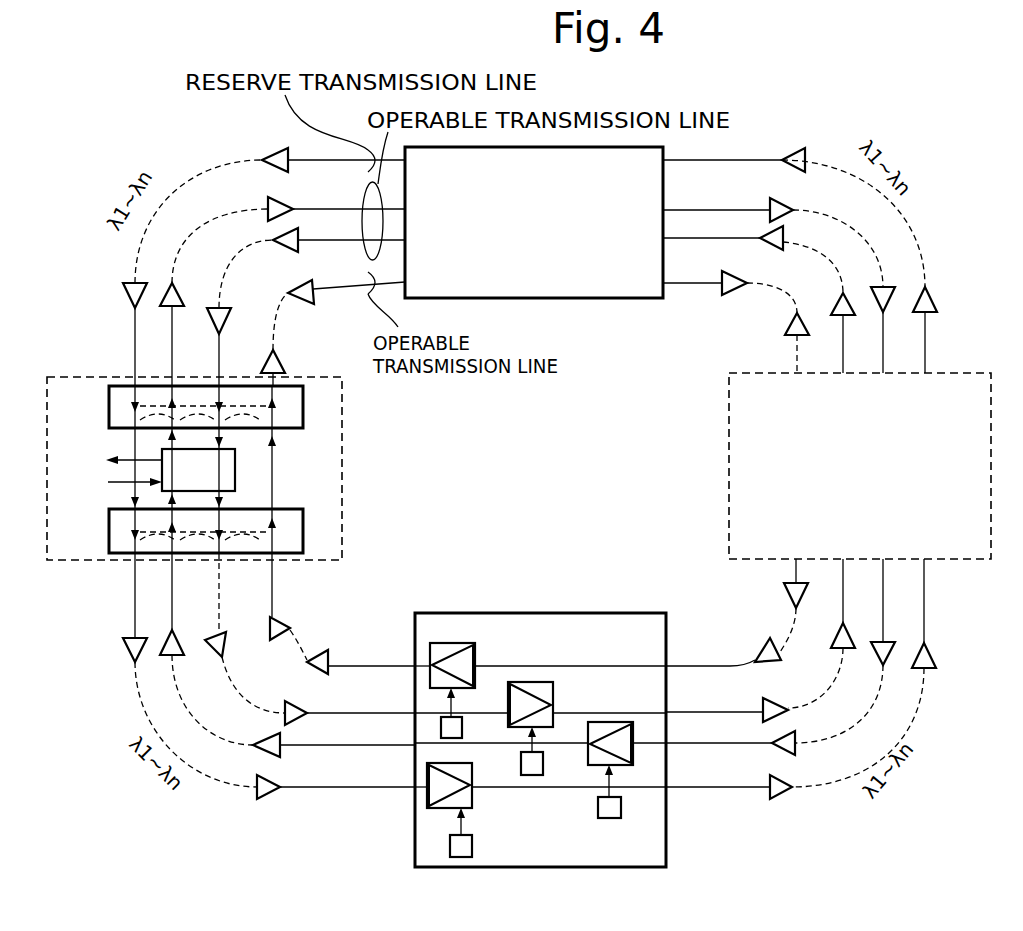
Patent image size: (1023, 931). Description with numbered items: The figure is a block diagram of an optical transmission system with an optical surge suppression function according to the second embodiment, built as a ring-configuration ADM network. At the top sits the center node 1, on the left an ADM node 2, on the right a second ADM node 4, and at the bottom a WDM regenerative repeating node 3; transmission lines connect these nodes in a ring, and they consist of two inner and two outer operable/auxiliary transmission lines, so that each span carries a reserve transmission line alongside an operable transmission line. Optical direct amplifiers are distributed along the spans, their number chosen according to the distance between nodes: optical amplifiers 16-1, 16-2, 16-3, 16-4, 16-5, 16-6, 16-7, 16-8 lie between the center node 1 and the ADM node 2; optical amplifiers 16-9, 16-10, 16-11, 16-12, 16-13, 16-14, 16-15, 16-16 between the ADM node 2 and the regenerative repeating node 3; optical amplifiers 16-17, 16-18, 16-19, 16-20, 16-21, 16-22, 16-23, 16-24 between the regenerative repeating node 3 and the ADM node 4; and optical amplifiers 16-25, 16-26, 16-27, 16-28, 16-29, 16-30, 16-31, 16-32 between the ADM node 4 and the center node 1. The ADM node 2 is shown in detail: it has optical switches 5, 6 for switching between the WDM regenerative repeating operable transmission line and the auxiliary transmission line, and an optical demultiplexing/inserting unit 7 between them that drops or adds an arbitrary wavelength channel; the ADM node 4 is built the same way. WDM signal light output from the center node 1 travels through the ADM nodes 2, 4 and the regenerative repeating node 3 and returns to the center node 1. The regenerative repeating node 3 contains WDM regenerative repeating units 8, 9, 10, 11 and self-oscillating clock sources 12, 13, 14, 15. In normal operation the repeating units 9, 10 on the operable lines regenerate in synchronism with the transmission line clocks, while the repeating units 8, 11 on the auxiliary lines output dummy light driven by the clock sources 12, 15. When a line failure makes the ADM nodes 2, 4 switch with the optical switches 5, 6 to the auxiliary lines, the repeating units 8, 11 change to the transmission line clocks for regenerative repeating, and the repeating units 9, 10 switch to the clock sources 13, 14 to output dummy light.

The center node 1 is at (595, 300).
The ADM node 2 is at (346, 468).
The regenerative repeating node 3 is at (505, 612).
The ADM node 4 is at (727, 460).
The optical switch 5 is at (293, 429).
The optical switch 6 is at (303, 523).
The optical demultiplexing/inserting unit 7 is at (235, 468).
The WDM regenerative repeating unit 8 is at (478, 656).
The WDM regenerative repeating unit 9 is at (555, 690).
The WDM regenerative repeating unit 10 is at (633, 765).
The WDM regenerative repeating unit 11 is at (472, 805).
The clock source 12 is at (462, 723).
The clock source 13 is at (543, 758).
The clock source 14 is at (621, 810).
The clock source 15 is at (472, 840).
The optical amplifier 16-1 is at (263, 151).
The optical amplifier 16-2 is at (265, 204).
The optical amplifier 16-3 is at (285, 250).
The optical amplifier 16-4 is at (289, 293).
The optical amplifier 16-5 is at (132, 302).
The optical amplifier 16-6 is at (170, 282).
The optical amplifier 16-7 is at (216, 304).
The optical amplifier 16-8 is at (285, 366).
The optical amplifier 16-9 is at (130, 658).
The optical amplifier 16-10 is at (175, 657).
The optical amplifier 16-11 is at (225, 640).
The optical amplifier 16-12 is at (275, 617).
The optical amplifier 16-13 is at (280, 794).
The optical amplifier 16-14 is at (280, 753).
The optical amplifier 16-15 is at (308, 705).
The optical amplifier 16-16 is at (326, 653).
The optical amplifier 16-17 is at (785, 795).
The optical amplifier 16-18 is at (770, 738).
The optical amplifier 16-19 is at (775, 690).
The optical amplifier 16-20 is at (765, 645).
The optical amplifier 16-21 is at (965, 647).
The optical amplifier 16-22 is at (887, 668).
The optical amplifier 16-23 is at (848, 650).
The optical amplifier 16-24 is at (785, 598).
The optical amplifier 16-25 is at (932, 313).
The optical amplifier 16-26 is at (875, 287).
The optical amplifier 16-27 is at (835, 305).
The optical amplifier 16-28 is at (790, 332).
The optical amplifier 16-29 is at (790, 168).
The optical amplifier 16-30 is at (790, 207).
The optical amplifier 16-31 is at (762, 236).
The optical amplifier 16-32 is at (730, 295).